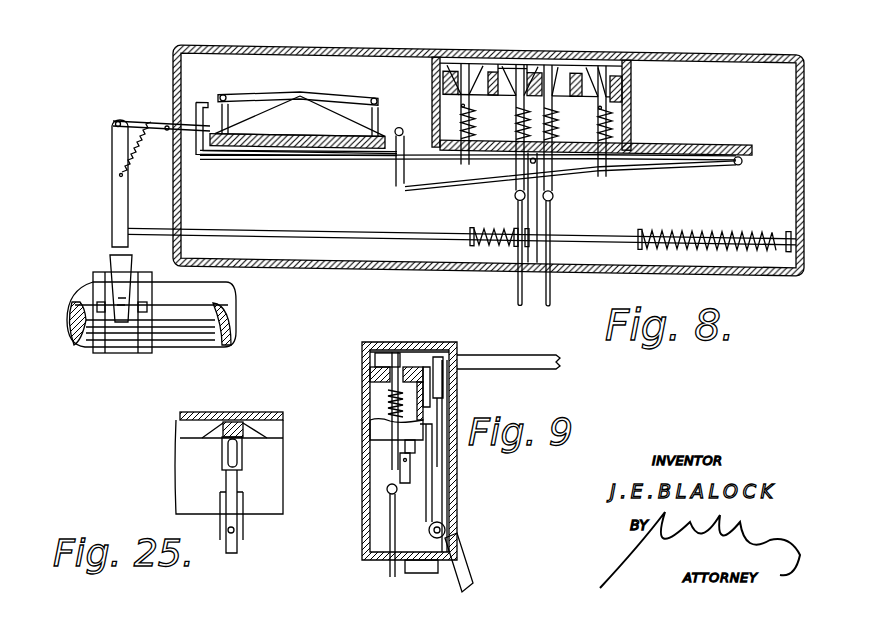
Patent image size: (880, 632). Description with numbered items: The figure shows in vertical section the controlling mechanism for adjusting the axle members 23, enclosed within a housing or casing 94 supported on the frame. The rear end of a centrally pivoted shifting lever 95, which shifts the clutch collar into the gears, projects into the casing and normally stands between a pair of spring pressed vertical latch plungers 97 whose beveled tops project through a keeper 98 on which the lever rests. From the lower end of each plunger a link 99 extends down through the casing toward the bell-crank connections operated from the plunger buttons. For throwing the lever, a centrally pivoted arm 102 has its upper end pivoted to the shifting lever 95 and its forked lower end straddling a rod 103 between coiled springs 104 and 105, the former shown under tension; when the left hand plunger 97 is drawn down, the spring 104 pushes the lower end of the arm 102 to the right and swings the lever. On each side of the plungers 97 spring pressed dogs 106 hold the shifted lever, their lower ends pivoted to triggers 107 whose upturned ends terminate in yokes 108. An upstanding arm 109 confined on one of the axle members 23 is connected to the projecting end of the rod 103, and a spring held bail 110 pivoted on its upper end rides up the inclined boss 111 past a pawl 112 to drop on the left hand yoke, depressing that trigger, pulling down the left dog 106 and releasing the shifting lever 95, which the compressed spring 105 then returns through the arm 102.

In FIG. 8, the housing or casing 94 is at (328, 46).
In FIG. 9, the housing or casing 94 is at (362, 505).
In FIG. 25, the housing or casing 94 is at (203, 402).
In FIG. 8, the shifting lever 95 is at (531, 64).
In FIG. 9, the shifting lever 95 is at (524, 355).
In FIG. 25, the shifting lever 95 is at (236, 412).
In FIG. 8, the latch plungers 97 is at (505, 66).
In FIG. 25, the latch plungers 97 is at (223, 430).
In FIG. 8, the keeper 98 is at (626, 60).
In FIG. 9, the keeper 98 is at (368, 385).
In FIG. 8, the link 99 is at (552, 205).
In FIG. 9, the link 99 is at (393, 522).
In FIG. 8, the centrally pivoted arm 102 is at (540, 213).
In FIG. 25, the centrally pivoted arm 102 is at (234, 483).
In FIG. 8, the rod 103 is at (313, 231).
In FIG. 9, the rod 103 is at (446, 530).
In FIG. 8, the coiled spring 104 is at (490, 224).
In FIG. 8, the coiled spring 105 is at (702, 236).
In FIG. 8, the spring pressed dogs 106 is at (463, 72).
In FIG. 9, the spring pressed dogs 106 is at (392, 377).
In FIG. 8, the triggers 107 is at (305, 164).
In FIG. 9, the triggers 107 is at (418, 473).
In FIG. 8, the yokes 108 is at (416, 118).
In FIG. 8, the upstanding arm 109 is at (118, 208).
In FIG. 8, the bail 110 is at (145, 106).
In FIG. 8, the boss 111 is at (300, 116).
In FIG. 8, the pawl 112 is at (298, 105).
In FIG. 8, the axle members 23 is at (210, 310).